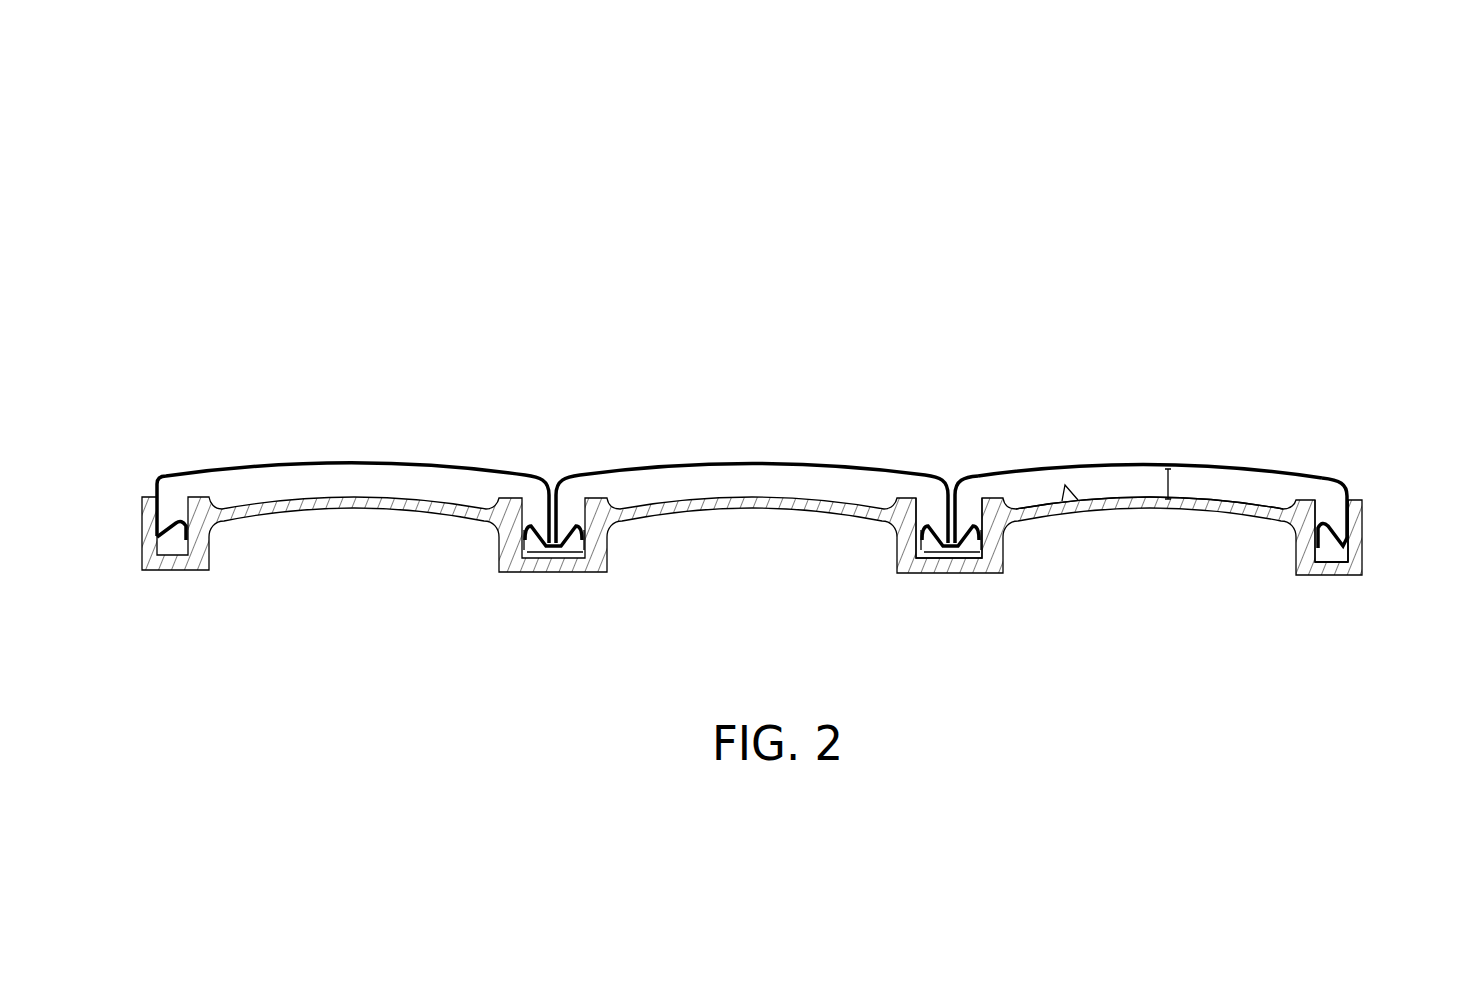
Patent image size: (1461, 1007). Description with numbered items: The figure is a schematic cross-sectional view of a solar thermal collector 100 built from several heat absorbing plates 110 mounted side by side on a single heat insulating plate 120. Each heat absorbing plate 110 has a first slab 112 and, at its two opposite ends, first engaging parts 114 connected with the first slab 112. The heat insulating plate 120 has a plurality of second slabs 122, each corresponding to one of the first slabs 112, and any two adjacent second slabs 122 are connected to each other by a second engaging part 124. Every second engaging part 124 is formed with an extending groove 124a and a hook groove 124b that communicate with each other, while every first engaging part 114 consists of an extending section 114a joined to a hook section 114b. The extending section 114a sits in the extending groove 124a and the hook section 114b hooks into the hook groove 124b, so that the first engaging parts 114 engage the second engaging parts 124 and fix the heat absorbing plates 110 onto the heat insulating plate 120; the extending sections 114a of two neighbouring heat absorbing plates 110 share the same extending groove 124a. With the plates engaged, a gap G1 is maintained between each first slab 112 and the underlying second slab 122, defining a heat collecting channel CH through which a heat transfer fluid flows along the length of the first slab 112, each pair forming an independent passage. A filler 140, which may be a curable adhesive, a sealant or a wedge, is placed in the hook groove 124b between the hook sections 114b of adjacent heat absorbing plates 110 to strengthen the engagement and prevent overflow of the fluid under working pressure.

The solar thermal collector 100 is at (1312, 198).
The heat absorbing plate 110 is at (780, 421).
The first slab 112 is at (1140, 466).
The first engaging part 114 is at (1176, 451).
The extending section 114a is at (1364, 500).
The hook section 114b is at (1321, 471).
The heat insulating plate 120 is at (790, 616).
The second slab 122 is at (1148, 508).
The second engaging part 124 is at (1338, 572).
The extending groove 124a is at (1352, 522).
The hook groove 124b is at (1327, 562).
The filler 140 is at (543, 548).
The heat collecting channel CH is at (1072, 514).
The gap G1 is at (1170, 486).